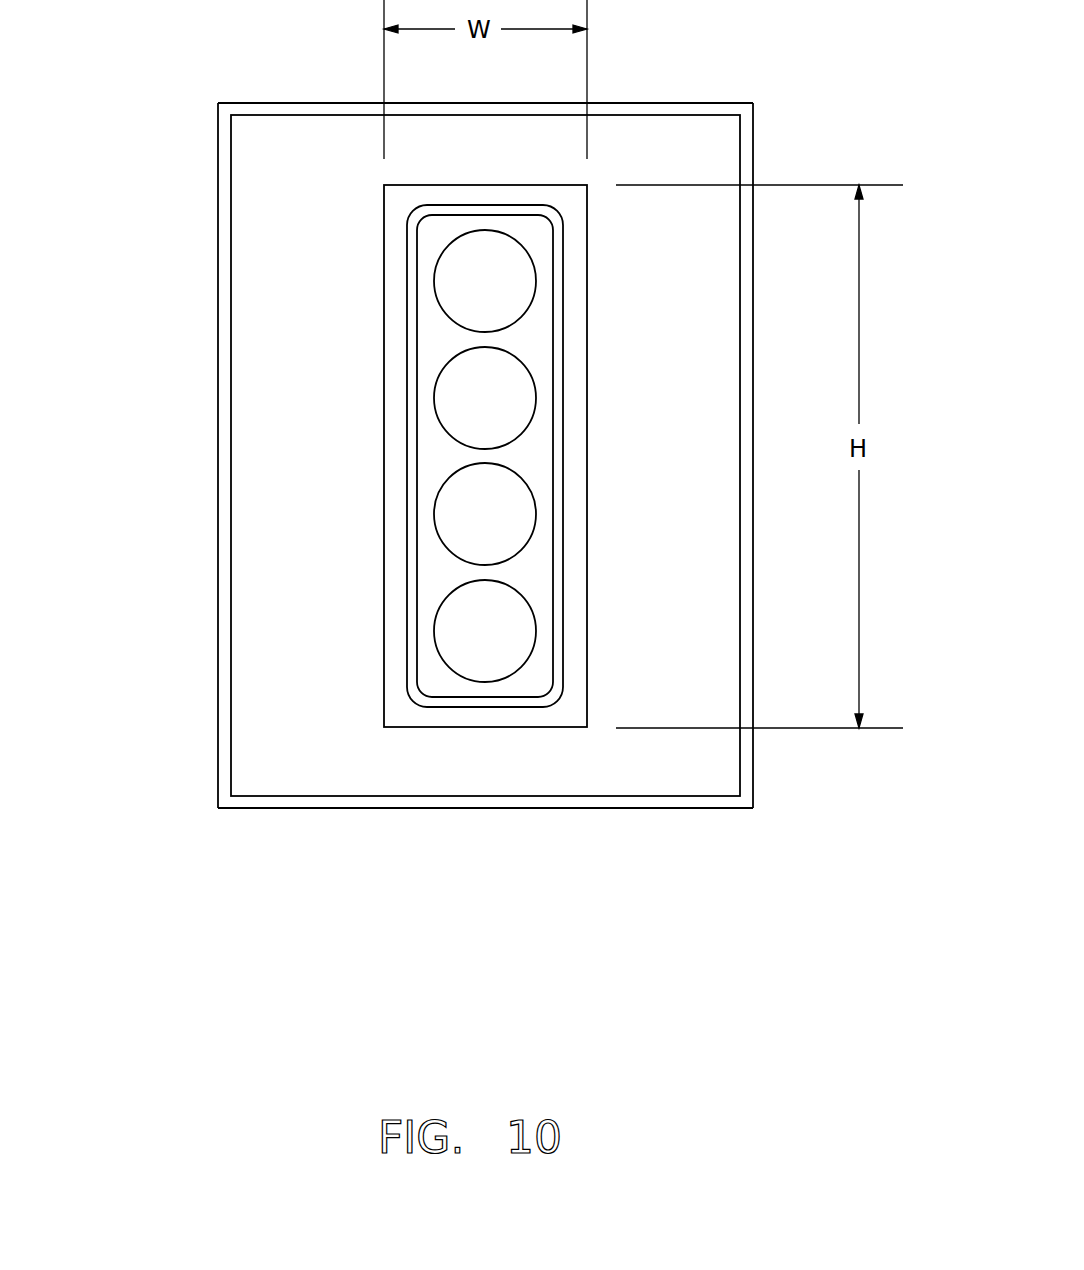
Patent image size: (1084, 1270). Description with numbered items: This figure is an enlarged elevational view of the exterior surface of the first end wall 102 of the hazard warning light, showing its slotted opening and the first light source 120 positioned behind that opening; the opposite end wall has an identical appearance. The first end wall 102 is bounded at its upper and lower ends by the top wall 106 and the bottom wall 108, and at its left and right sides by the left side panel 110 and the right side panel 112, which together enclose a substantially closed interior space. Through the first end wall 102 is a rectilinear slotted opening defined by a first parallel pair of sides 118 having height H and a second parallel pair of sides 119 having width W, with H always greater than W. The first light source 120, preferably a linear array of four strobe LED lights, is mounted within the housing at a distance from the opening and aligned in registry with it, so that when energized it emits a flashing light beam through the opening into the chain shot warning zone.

The first end wall 102 is at (320, 540).
The top wall 106 is at (293, 103).
The bottom wall 108 is at (408, 808).
The left side panel 110 is at (218, 374).
The right side panel 112 is at (753, 757).
The first parallel pair of sides 118 is at (384, 373).
The second parallel pair of sides 119 is at (520, 185).
The first light source 120 is at (429, 339).